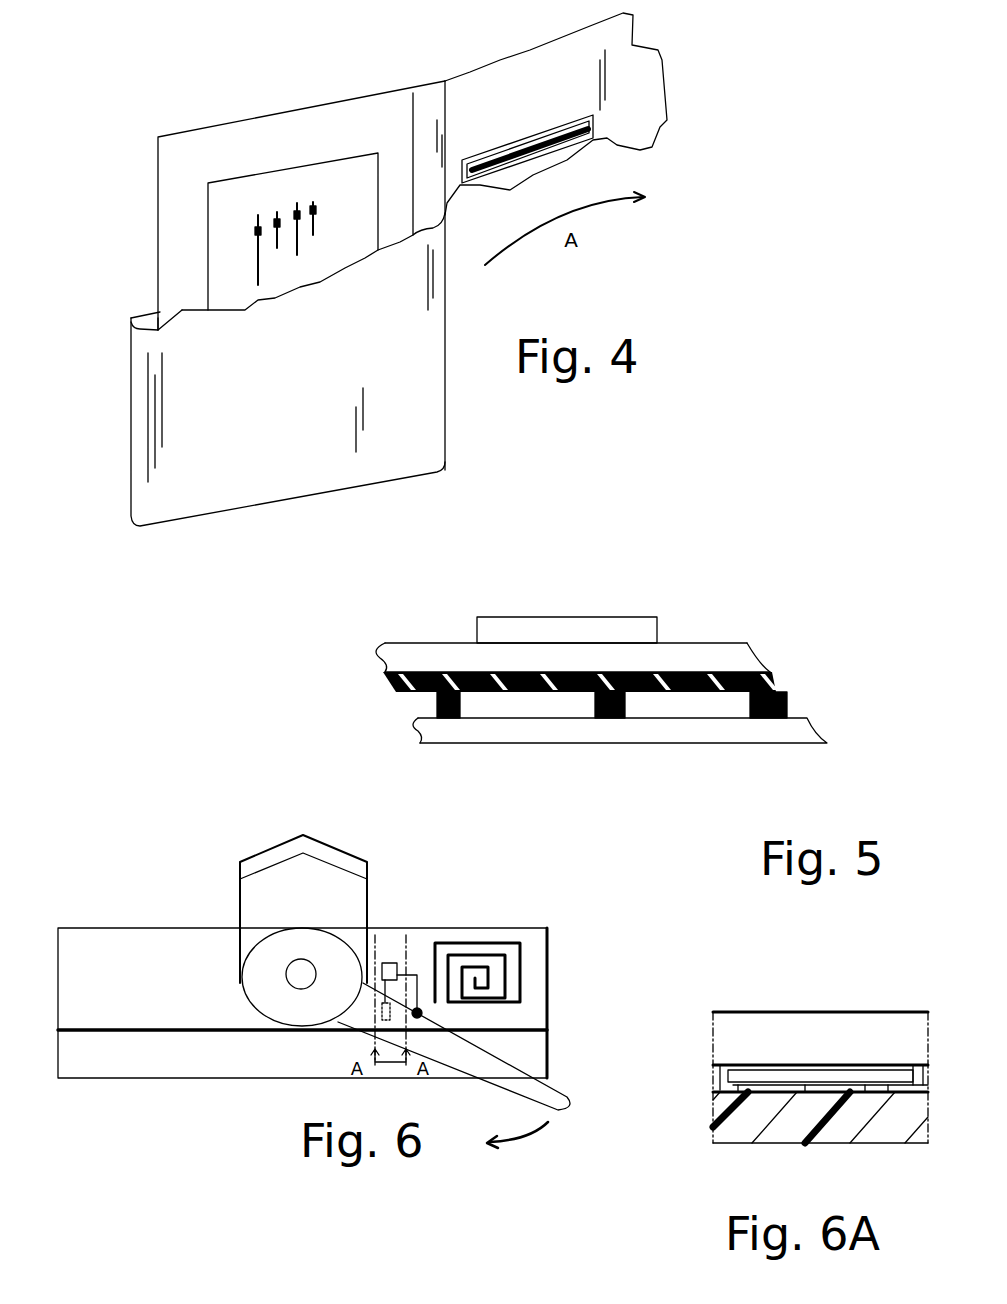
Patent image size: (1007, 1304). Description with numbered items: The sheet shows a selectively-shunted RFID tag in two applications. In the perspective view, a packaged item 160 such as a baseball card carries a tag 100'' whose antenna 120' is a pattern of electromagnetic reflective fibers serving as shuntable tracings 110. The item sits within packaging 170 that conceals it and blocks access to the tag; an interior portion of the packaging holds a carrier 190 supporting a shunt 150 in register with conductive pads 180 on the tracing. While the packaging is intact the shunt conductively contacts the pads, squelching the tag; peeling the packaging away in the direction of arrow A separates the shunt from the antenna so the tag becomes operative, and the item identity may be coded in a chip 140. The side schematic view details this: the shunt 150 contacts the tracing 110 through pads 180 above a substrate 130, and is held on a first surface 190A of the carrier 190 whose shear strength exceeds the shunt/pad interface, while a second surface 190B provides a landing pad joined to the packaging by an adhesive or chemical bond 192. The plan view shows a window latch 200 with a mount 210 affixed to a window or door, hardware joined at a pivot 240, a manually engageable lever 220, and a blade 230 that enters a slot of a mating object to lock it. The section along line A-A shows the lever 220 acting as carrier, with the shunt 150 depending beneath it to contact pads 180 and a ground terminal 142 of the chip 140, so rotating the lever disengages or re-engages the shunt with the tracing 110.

In FIG. 4, the tag 100'' is at (297, 180).
In FIG. 5, the tracing 110 is at (593, 677).
In FIG. 6, the tracing 110 is at (462, 942).
In FIG. 6A, the tracing 110 is at (888, 1086).
In FIG. 4, the antenna 120' is at (153, 272).
In FIG. 5, the substrate 130 is at (518, 728).
In FIG. 6, the chip 140 is at (390, 962).
In FIG. 6A, the chip 140 is at (830, 1086).
In FIG. 6, the ground terminal 142 is at (383, 1003).
In FIG. 4, the shunt 150 is at (505, 147).
In FIG. 5, the shunt 150 is at (395, 686).
In FIG. 6A, the shunt 150 is at (748, 1077).
In FIG. 4, the item 160 is at (222, 153).
In FIG. 4, the packaging 170 is at (288, 472).
In FIG. 4, the pad 180 is at (258, 232).
In FIG. 5, the pad 180 is at (588, 697).
In FIG. 6, the pad 180 is at (418, 1015).
In FIG. 6A, the pad 180 is at (775, 1086).
In FIG. 4, the carrier 190 is at (628, 152).
In FIG. 5, the carrier 190 is at (687, 655).
In FIG. 5, the first surface 190A is at (770, 690).
In FIG. 5, the second surface 190B is at (433, 640).
In FIG. 5, the adhesive or chemical bond 192 is at (547, 627).
In FIG. 6, the window latch 200 is at (302, 1077).
In FIG. 6, the mount 210 is at (302, 1003).
In FIG. 6A, the mount 210 is at (753, 1123).
In FIG. 6, the lever 220 is at (465, 1053).
In FIG. 6A, the lever 220 is at (867, 1040).
In FIG. 6, the blade 230 is at (262, 895).
In FIG. 6, the pivot 240 is at (298, 975).